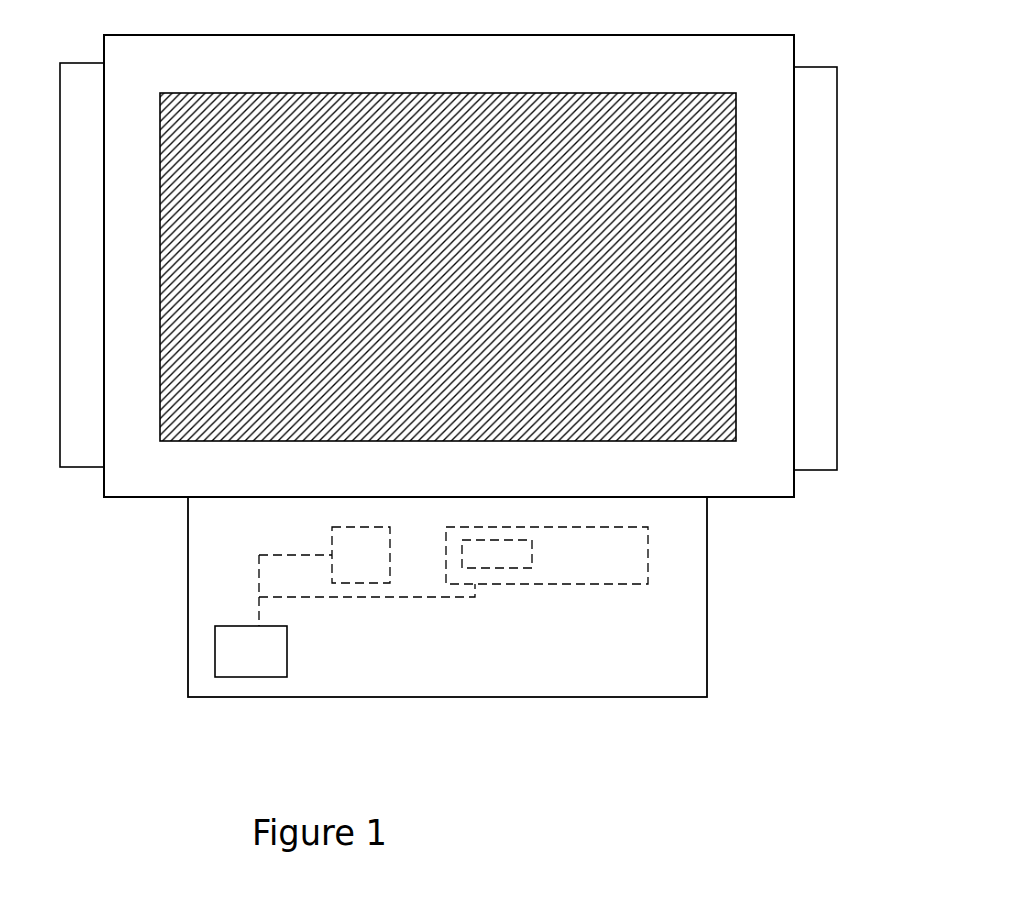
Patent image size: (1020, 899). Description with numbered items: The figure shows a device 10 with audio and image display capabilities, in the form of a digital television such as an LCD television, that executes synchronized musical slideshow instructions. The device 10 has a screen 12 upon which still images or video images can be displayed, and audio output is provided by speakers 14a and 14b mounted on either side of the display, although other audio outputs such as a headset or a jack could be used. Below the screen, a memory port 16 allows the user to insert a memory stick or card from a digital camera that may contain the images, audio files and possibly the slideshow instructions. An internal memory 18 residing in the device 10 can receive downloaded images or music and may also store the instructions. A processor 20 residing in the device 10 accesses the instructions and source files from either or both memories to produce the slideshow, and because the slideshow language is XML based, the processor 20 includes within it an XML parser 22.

The device 10 is at (765, 499).
The screen 12 is at (665, 93).
The speaker 14a is at (837, 326).
The speaker 14b is at (68, 468).
The memory port 16 is at (288, 664).
The memory 18 is at (332, 527).
The processor 20 is at (648, 584).
The XML parser 22 is at (530, 568).